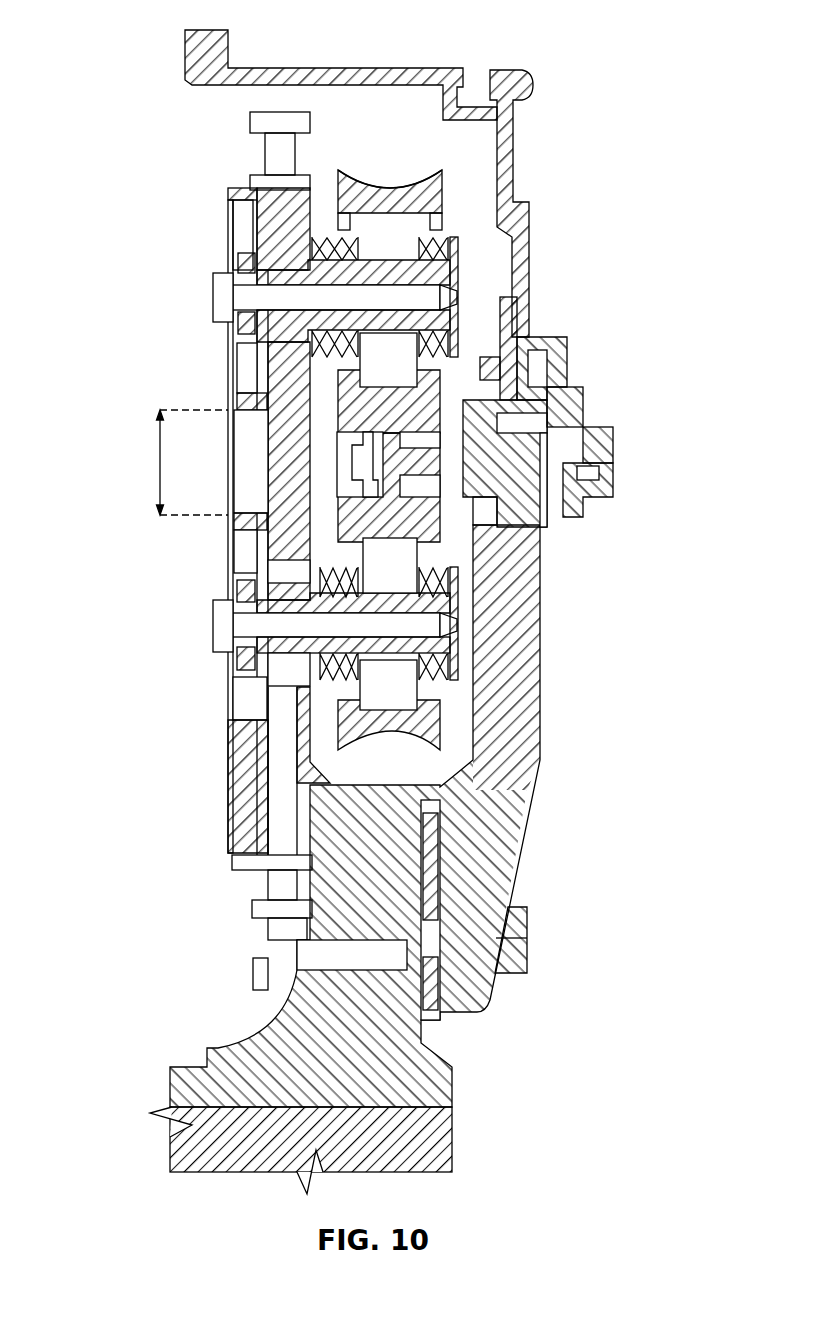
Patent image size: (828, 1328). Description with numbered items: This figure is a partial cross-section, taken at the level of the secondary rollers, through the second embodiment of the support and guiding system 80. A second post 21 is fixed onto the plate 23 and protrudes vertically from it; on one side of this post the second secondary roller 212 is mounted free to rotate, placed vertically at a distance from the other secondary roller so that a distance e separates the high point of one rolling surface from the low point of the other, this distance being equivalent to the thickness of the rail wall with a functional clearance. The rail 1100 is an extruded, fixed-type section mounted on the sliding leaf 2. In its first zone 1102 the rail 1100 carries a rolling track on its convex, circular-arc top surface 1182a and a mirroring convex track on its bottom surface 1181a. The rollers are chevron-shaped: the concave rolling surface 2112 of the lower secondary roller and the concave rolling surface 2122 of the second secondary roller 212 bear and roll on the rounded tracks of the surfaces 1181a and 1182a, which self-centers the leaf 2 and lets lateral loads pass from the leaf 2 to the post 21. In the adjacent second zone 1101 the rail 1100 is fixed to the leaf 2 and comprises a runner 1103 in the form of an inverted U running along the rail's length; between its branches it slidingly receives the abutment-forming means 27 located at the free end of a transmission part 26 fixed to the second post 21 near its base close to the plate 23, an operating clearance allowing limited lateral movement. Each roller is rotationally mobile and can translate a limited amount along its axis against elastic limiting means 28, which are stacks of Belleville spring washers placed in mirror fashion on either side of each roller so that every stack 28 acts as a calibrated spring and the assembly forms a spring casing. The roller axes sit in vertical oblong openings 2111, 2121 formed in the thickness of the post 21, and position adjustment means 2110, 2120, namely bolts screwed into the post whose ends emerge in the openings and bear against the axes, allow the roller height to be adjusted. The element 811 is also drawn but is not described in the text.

The sliding leaf 2 is at (330, 68).
The second post 21 is at (255, 782).
The plate 23 is at (185, 1135).
The transmission part 26 is at (505, 822).
The abutment-forming means 27 is at (565, 495).
The elastic limiting means 28 is at (462, 255).
The support and guiding system 80 is at (105, 216).
The second secondary roller 212 is at (443, 200).
The side wall 811 is at (525, 676).
The rail 1100 is at (552, 388).
The second zone 1101 is at (590, 440).
The first zone 1102 is at (450, 545).
The runner 1103 is at (575, 410).
The bottom surface 1181a is at (458, 578).
The top surface 1182a is at (432, 392).
The position adjustment means 2110 is at (255, 908).
The oblong opening 2111 is at (255, 683).
The rolling surface 2112 is at (427, 719).
The position adjustment means 2120 is at (252, 122).
The oblong opening 2121 is at (243, 352).
The rolling surface 2122 is at (393, 180).
The distance e is at (160, 445).